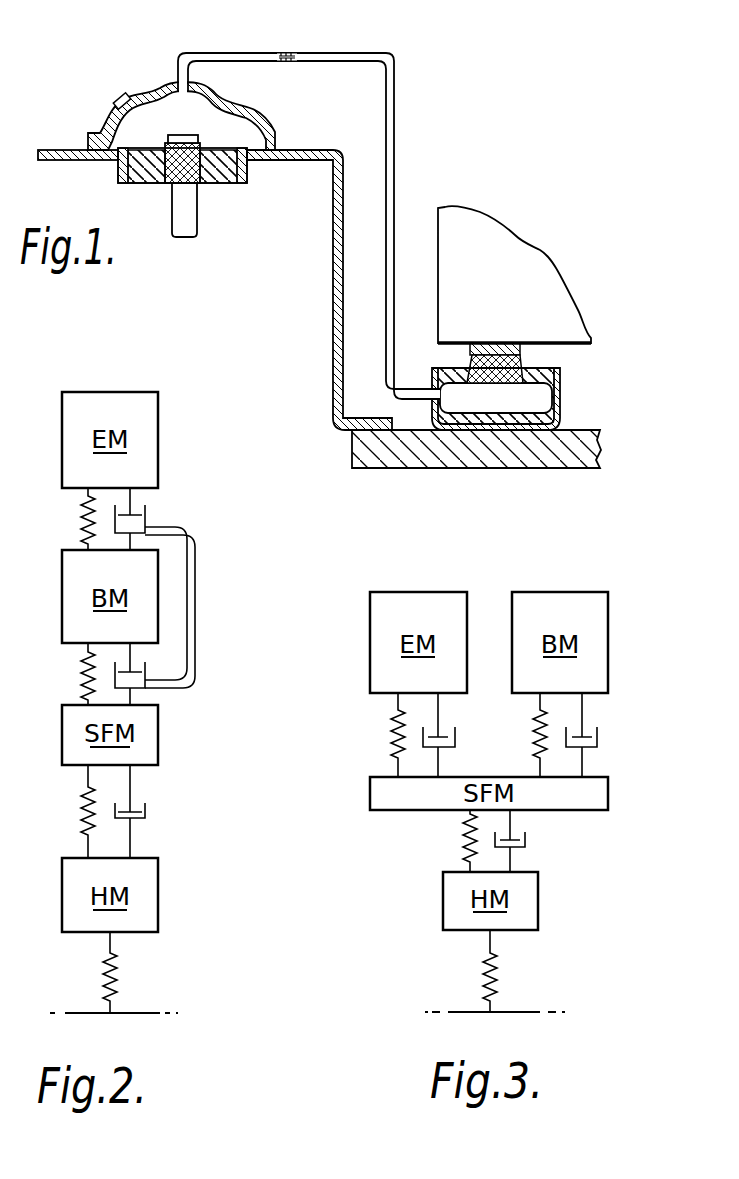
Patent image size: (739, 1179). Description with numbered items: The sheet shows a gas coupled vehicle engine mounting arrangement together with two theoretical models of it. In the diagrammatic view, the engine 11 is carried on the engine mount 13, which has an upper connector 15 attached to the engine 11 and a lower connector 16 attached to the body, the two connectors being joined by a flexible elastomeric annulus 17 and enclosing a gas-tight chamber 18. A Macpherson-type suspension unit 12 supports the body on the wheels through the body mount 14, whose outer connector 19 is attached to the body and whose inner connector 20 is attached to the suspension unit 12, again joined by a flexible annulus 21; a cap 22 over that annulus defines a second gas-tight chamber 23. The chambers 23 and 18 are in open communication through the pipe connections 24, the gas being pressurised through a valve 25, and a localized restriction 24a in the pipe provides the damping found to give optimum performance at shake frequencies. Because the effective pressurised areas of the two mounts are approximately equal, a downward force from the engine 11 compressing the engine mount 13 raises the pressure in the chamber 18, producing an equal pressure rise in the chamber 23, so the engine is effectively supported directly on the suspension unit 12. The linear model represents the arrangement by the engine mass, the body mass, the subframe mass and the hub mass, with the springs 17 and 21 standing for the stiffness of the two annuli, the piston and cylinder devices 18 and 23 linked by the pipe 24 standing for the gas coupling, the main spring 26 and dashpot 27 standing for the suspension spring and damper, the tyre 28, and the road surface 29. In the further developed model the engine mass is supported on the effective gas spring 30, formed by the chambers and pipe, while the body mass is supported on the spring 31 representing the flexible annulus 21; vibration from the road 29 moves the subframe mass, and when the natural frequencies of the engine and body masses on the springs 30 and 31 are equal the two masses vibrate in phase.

In FIG. 1, the engine 11 is at (513, 253).
In FIG. 1, the suspension unit 12 is at (188, 215).
In FIG. 1, the engine mount 13 is at (578, 373).
In FIG. 1, the body mount 14 is at (142, 90).
In FIG. 1, the upper connector 15 is at (498, 358).
In FIG. 1, the lower connector 16 is at (560, 408).
In FIG. 1, the flexible annulus 17 is at (463, 373).
In FIG. 2, the flexible annulus 17 is at (82, 520).
In FIG. 1, the gas-tight chamber 18 is at (502, 407).
In FIG. 2, the gas-tight chamber 18 is at (135, 522).
In FIG. 1, the outer connector 19 is at (243, 170).
In FIG. 1, the inner connector 20 is at (193, 160).
In FIG. 1, the flexible annulus 21 is at (147, 168).
In FIG. 2, the flexible annulus 21 is at (82, 675).
In FIG. 1, the cap 22 is at (247, 116).
In FIG. 1, the gas-tight chamber 23 is at (137, 135).
In FIG. 2, the gas-tight chamber 23 is at (135, 680).
In FIG. 1, the pipe connections 24 is at (390, 152).
In FIG. 2, the pipe connections 24 is at (195, 605).
In FIG. 1, the localized restriction 24a is at (283, 52).
In FIG. 1, the valve 25 is at (120, 98).
In FIG. 2, the main spring 26 is at (87, 810).
In FIG. 3, the main spring 26 is at (463, 840).
In FIG. 2, the dashpot 27 is at (148, 808).
In FIG. 3, the dashpot 27 is at (527, 840).
In FIG. 2, the tyre 28 is at (107, 980).
In FIG. 3, the tyre 28 is at (487, 975).
In FIG. 2, the road surface 29 is at (131, 1023).
In FIG. 3, the road surface 29 is at (515, 1020).
In FIG. 3, the effective gas spring 30 is at (376, 749).
In FIG. 3, the flexible annulus spring 31 is at (616, 753).